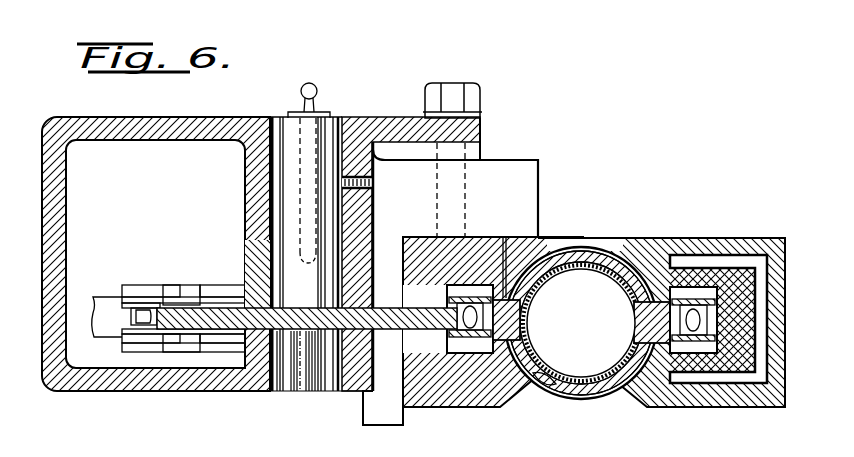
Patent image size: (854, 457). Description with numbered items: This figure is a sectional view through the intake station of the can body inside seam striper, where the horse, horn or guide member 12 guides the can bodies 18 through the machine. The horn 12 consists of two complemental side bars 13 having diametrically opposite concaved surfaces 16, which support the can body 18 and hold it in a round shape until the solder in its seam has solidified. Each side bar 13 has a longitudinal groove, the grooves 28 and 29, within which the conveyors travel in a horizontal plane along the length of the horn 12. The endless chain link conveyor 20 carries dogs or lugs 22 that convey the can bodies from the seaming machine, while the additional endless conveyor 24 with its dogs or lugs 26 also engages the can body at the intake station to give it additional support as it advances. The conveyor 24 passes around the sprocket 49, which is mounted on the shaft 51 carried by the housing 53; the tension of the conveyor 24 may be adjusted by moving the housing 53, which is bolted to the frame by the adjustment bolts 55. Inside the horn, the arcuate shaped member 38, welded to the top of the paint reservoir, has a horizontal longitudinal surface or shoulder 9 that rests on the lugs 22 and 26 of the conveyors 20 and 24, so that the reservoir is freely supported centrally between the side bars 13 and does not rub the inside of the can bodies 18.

The horizontal longitudinal surface or shoulder 9 is at (517, 270).
The horse, horn or guide member 12 is at (546, 236).
The side bars 13 is at (460, 407).
The concaved surfaces 16 is at (605, 258).
The can body 18 is at (577, 398).
The endless chain link conveyor 20 is at (713, 283).
The dogs or lugs 22 is at (634, 323).
The endless conveyor 24 is at (457, 354).
The dogs or lugs 26 is at (103, 337).
The longitudinal groove 28 is at (657, 345).
The longitudinal groove 29 is at (500, 341).
The arcuate shaped member 38 is at (537, 262).
The sprocket 49 is at (190, 306).
The shaft 51 is at (288, 391).
The housing 53 is at (243, 117).
The adjustment bolts 55 is at (482, 103).